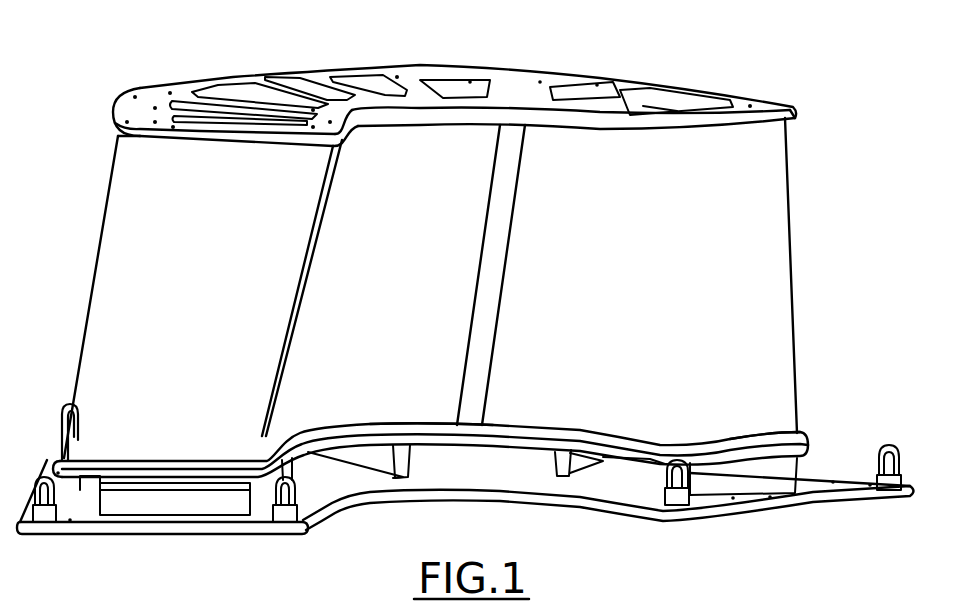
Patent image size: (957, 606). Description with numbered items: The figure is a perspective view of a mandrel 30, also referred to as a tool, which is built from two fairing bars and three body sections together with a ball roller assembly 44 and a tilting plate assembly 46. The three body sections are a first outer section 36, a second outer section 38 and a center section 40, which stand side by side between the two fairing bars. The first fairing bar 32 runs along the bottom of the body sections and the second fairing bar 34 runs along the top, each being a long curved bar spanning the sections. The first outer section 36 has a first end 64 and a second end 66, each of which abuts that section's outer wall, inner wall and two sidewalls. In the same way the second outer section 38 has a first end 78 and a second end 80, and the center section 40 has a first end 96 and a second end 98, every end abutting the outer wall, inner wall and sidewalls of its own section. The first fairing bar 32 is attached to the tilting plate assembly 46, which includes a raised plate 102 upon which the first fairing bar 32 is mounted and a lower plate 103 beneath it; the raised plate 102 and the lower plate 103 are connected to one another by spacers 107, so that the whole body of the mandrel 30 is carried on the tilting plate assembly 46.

The mandrel 30 is at (725, 73).
The first fairing bar 32 is at (809, 440).
The second fairing bar 34 is at (515, 82).
The first outer section 36 is at (125, 288).
The second outer section 38 is at (768, 263).
The center section 40 is at (343, 400).
The ball roller assembly 44 is at (517, 447).
The tilting plate assembly 46 is at (852, 505).
The first end 64 is at (62, 458).
The second end 66 is at (178, 146).
The first end 78 is at (730, 438).
The second end 80 is at (710, 136).
The first end 96 is at (403, 428).
The second end 98 is at (388, 123).
The raised plate 102 is at (698, 468).
The lower plate 103 is at (112, 533).
The spacers 107 is at (743, 483).